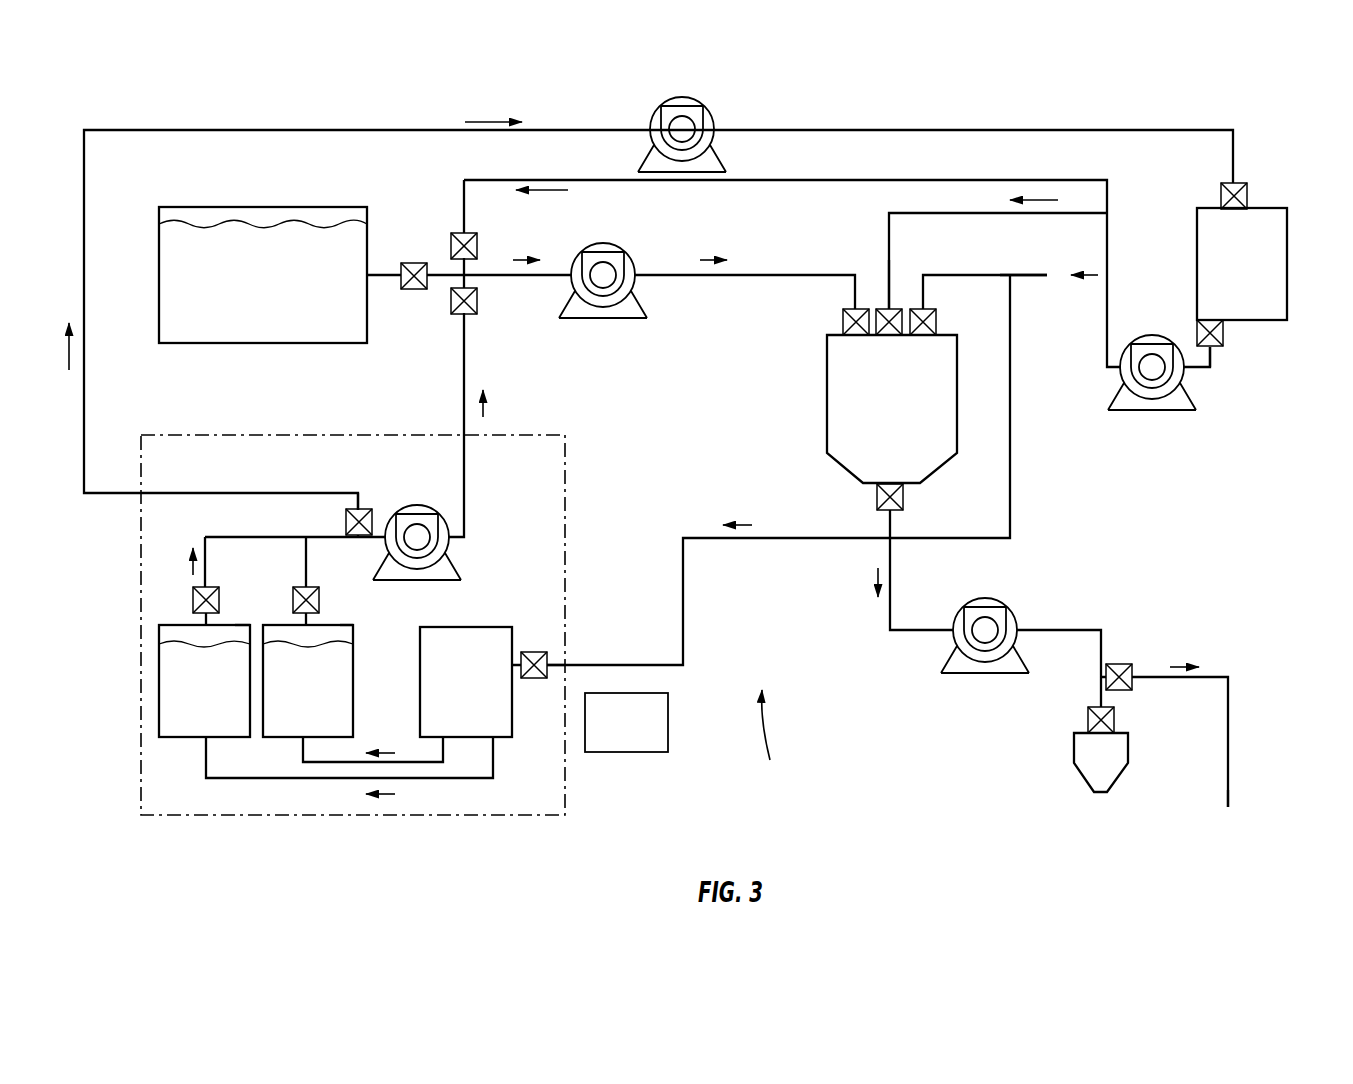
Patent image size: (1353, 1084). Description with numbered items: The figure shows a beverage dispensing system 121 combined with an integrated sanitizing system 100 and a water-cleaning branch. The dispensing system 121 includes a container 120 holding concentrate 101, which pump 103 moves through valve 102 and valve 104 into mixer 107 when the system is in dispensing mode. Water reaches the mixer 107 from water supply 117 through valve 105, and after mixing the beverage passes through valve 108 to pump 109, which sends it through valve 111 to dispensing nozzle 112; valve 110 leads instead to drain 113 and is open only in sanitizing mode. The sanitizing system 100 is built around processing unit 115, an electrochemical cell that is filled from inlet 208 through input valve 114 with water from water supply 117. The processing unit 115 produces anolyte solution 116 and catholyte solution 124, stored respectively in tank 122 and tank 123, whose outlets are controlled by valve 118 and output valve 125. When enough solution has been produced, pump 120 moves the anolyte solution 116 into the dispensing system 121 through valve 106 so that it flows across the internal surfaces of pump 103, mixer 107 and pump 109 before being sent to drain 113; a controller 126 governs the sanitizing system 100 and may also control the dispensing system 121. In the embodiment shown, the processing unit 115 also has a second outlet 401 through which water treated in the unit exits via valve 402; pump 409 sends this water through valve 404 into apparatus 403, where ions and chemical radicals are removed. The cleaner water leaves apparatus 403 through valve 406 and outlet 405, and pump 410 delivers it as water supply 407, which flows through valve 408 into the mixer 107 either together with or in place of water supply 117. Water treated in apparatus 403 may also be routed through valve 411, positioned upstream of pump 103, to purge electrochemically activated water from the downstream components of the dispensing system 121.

The sanitizing system 100 is at (222, 474).
The concentrate 101 is at (279, 298).
The valve 102 is at (428, 262).
The pump 103 is at (586, 250).
The valve 104 is at (843, 318).
The valve 105 is at (936, 318).
The valve 106 is at (477, 297).
The mixer 107 is at (911, 423).
The valve 108 is at (878, 499).
The pump 109 is at (975, 600).
The valve 110 is at (1132, 666).
The valve 111 is at (1088, 718).
The dispensing nozzle 112 is at (1077, 767).
The drain 113 is at (1228, 805).
The input valve 114 is at (535, 652).
The processing unit 115 is at (481, 691).
The anolyte solution 116 is at (324, 691).
The water supply 117 is at (1043, 275).
The valve 118 is at (319, 602).
The pump 120 is at (396, 520).
The beverage dispensing system 121 is at (772, 743).
The tank 122 is at (355, 637).
The tank 123 is at (247, 625).
The catholyte solution 124 is at (221, 691).
The output valve 125 is at (194, 588).
The controller 126 is at (668, 728).
The inlet 208 is at (548, 680).
The second outlet 401 is at (369, 494).
The valve 402 is at (346, 522).
The apparatus 403 is at (1258, 279).
The valve 404 is at (1244, 184).
The outlet 405 is at (1210, 355).
The valve 406 is at (1222, 330).
The water supply 407 is at (886, 309).
The valve 408 is at (895, 309).
The pump 409 is at (718, 162).
The pump 410 is at (1113, 399).
The valve 411 is at (477, 235).